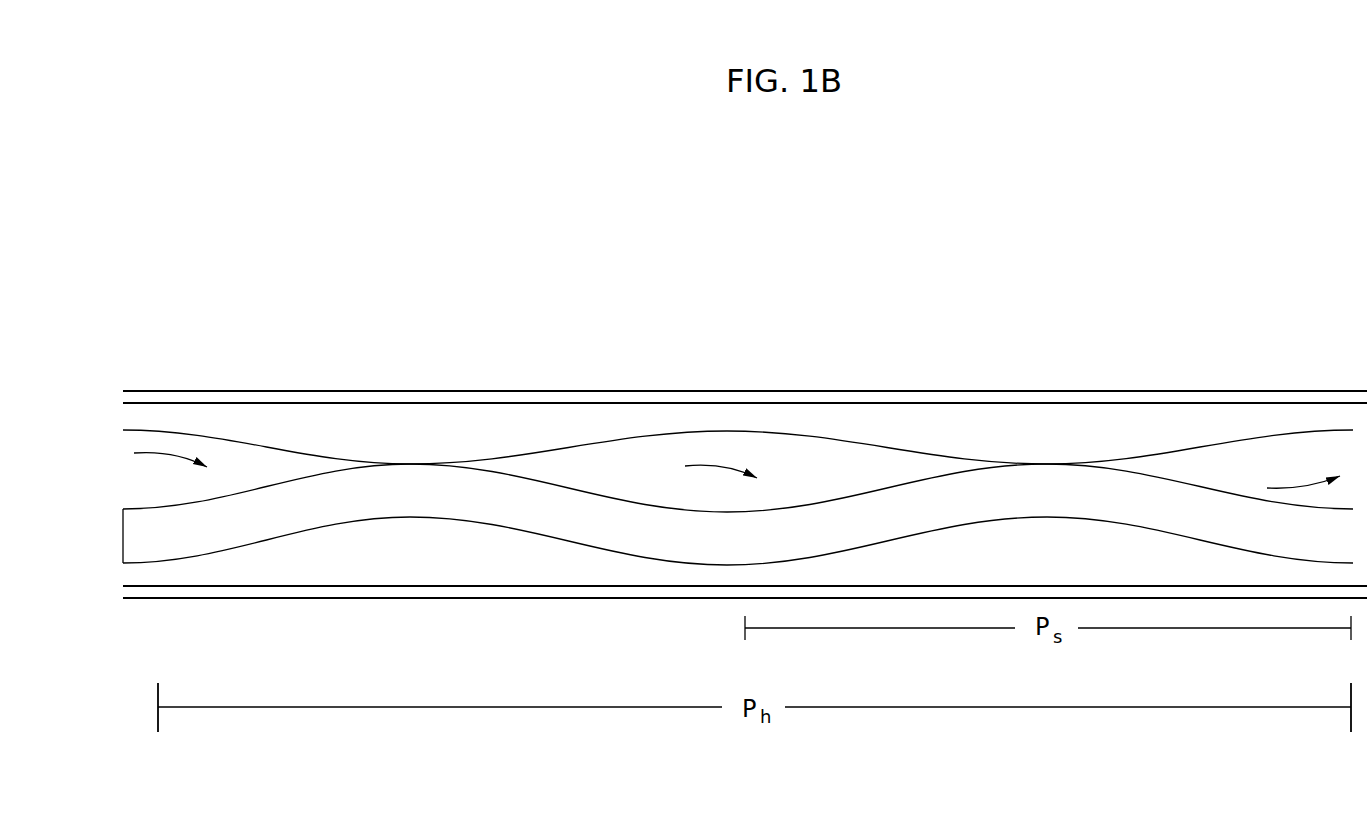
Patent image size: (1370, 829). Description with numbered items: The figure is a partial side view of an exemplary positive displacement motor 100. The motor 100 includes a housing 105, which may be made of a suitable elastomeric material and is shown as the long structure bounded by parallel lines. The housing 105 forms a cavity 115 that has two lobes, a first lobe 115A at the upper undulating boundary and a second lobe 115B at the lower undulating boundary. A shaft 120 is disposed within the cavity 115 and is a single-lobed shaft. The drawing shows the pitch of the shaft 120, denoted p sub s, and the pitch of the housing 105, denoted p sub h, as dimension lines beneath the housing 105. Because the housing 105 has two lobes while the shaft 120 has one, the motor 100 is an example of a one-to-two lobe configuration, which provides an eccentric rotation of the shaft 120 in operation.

The positive displacement motor 100 is at (1177, 315).
The housing 105 is at (384, 431).
The cavity 115 is at (795, 460).
The lobe 115A is at (732, 430).
The lobe 115B is at (720, 567).
The shaft 120 is at (1065, 490).